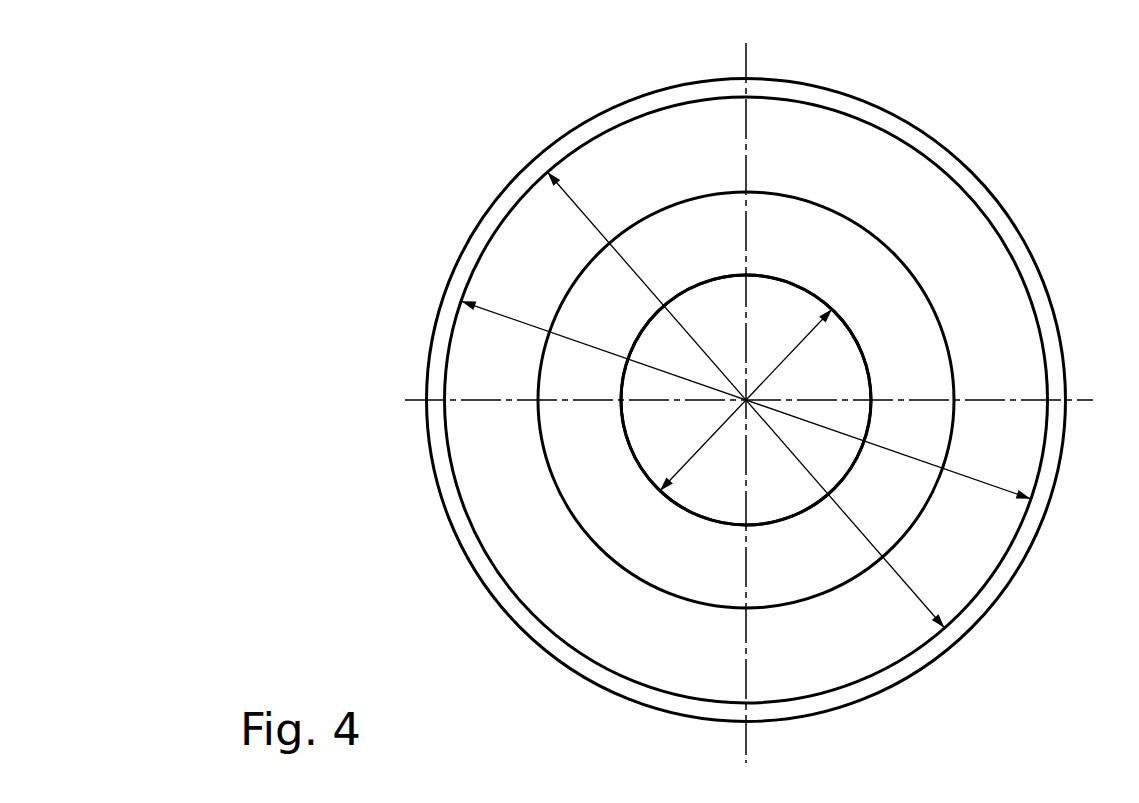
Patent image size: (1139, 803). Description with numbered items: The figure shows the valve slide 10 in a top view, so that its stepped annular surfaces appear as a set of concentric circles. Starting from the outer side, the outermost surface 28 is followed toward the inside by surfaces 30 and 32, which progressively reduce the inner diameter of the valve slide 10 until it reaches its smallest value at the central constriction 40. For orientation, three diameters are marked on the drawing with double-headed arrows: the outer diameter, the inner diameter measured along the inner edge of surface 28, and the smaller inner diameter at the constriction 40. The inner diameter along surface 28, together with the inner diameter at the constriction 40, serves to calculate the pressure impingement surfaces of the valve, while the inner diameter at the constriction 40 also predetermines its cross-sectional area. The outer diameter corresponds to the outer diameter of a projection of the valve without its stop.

The valve slide 10 is at (437, 148).
The surface 28 is at (592, 128).
The surface 30 is at (902, 188).
The surface 32 is at (778, 257).
The constriction 40 is at (830, 362).